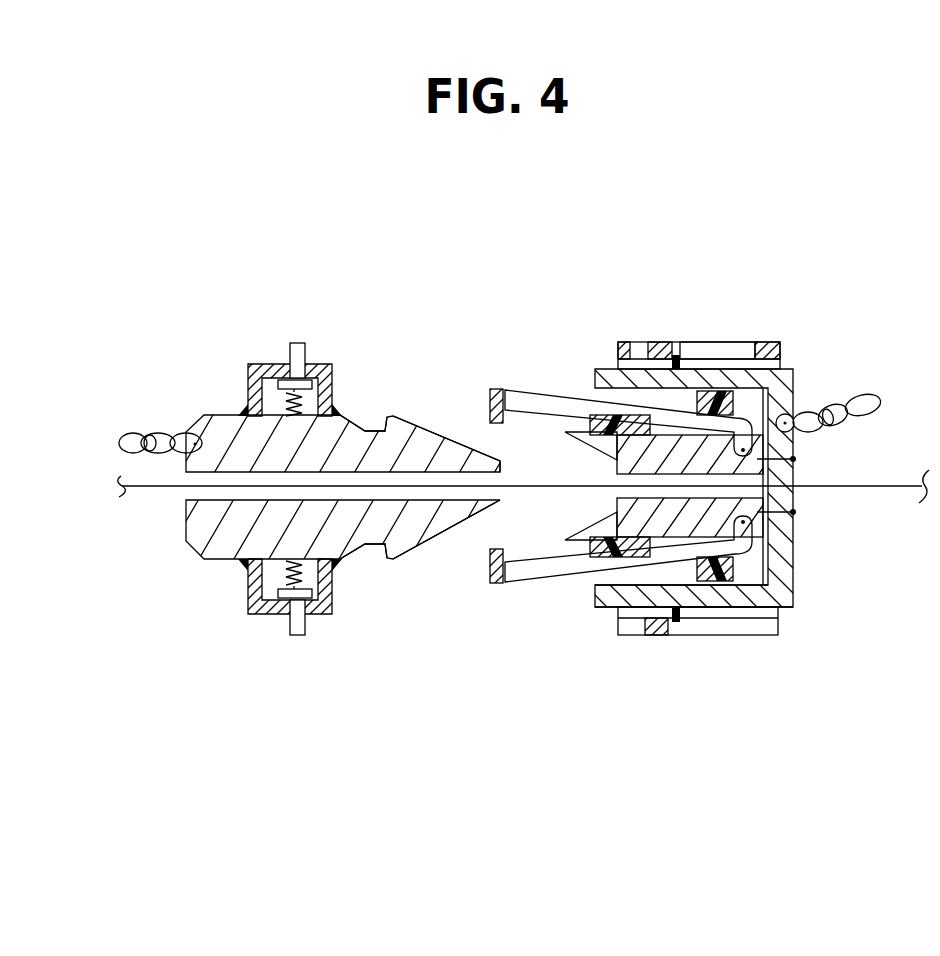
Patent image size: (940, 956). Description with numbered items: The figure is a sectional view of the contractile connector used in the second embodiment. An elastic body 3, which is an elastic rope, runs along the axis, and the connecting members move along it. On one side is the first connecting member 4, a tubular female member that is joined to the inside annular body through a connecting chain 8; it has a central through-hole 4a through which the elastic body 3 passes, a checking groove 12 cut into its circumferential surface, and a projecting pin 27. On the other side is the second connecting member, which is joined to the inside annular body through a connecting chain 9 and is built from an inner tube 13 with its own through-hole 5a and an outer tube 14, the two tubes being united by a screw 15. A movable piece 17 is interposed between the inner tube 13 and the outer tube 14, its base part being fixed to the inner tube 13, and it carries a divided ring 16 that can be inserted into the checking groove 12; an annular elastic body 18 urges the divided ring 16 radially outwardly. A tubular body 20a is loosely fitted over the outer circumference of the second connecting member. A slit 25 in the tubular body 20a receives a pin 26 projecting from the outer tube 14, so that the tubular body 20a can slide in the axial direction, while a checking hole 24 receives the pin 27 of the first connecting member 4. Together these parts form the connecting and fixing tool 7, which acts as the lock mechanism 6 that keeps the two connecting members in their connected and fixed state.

The elastic body 3 is at (892, 486).
The first connecting member 4 is at (335, 445).
The through-hole 4a is at (430, 478).
The through-hole 5a is at (620, 470).
The lock mechanism 6 is at (309, 427).
The connecting and fixing tool 7 is at (682, 437).
The connecting chain 8 is at (158, 430).
The connecting chain 9 is at (852, 402).
The checking groove 12 is at (375, 548).
The inner tube 13 is at (671, 523).
The outer tube 14 is at (713, 603).
The screw 15 is at (795, 513).
The divided ring 16 is at (490, 583).
The movable piece 17 is at (538, 398).
The annular elastic body 18 is at (577, 560).
The tubular body 20a is at (697, 299).
The checking hole 24 is at (632, 357).
The slit 25 is at (707, 352).
The pin 26 is at (677, 355).
The pin 27 is at (298, 343).